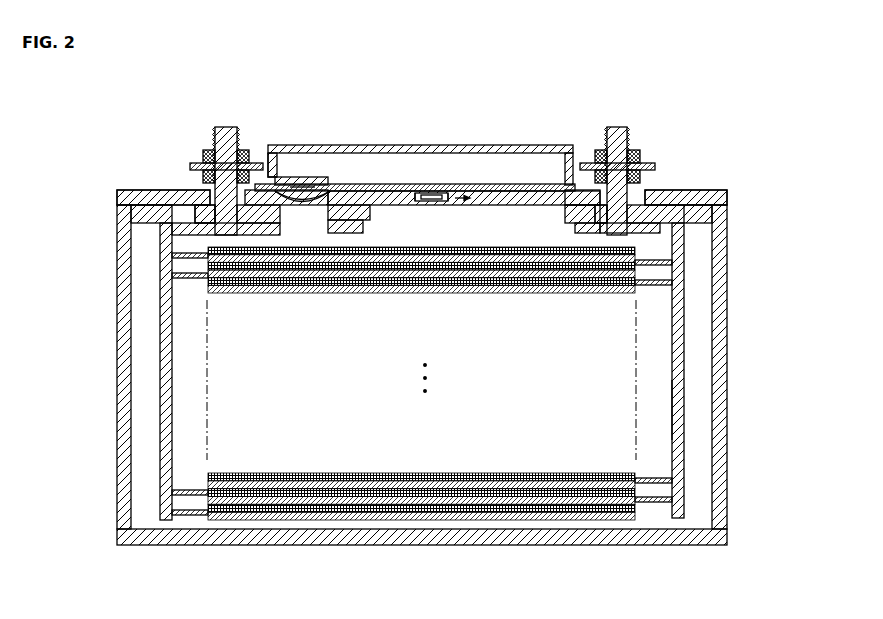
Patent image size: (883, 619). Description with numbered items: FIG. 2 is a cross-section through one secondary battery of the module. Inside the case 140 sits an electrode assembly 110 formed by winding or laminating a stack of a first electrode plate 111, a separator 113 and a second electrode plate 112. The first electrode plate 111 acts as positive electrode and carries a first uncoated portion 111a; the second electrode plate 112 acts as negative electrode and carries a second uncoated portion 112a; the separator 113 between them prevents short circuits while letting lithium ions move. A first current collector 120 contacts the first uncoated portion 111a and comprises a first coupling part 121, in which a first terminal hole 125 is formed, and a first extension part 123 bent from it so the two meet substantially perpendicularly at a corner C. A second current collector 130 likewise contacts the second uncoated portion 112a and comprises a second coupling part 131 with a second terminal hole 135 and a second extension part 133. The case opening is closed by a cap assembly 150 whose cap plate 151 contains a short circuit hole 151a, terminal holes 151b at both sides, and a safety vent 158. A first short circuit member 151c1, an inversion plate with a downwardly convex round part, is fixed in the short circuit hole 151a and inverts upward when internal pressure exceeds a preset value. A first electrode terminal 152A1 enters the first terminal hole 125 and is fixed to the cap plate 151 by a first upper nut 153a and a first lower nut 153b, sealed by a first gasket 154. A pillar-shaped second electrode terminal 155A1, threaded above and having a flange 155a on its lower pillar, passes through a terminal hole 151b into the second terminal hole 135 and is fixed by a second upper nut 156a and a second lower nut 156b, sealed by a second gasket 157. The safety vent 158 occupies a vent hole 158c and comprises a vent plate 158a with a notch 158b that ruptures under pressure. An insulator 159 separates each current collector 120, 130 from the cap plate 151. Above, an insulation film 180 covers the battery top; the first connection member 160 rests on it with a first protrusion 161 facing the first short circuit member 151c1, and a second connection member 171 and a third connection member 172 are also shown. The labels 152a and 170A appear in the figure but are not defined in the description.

The electrode assembly 110 is at (501, 531).
The first electrode plate 111 is at (565, 521).
The first uncoated portion 111a is at (655, 503).
The second electrode plate 112 is at (421, 531).
The second uncoated portion 112a is at (190, 516).
The separator 113 is at (437, 507).
The first current collector 120 is at (686, 328).
The first coupling part 121 is at (655, 200).
The first extension part 123 is at (684, 390).
The first terminal hole 125 is at (655, 265).
The second current collector 130 is at (158, 328).
The second coupling part 131 is at (175, 198).
The second extension part 133 is at (163, 405).
The second terminal hole 135 is at (200, 235).
The case 140 is at (728, 452).
The cap assembly 150 is at (303, 144).
The cap plate 151 is at (421, 289).
The short circuit hole 151a is at (290, 268).
The terminal holes 151b is at (232, 295).
The first short circuit member 151c1 is at (330, 282).
The first electrode terminal 152A1 is at (617, 127).
The second terminal flange 152a is at (660, 195).
The first upper nut 153a is at (634, 150).
The first lower nut 153b is at (642, 181).
The first gasket 154 is at (212, 210).
The second electrode terminal 155A1 is at (226, 127).
The flange 155a is at (200, 197).
The second upper nut 156a is at (208, 150).
The second lower nut 156b is at (205, 176).
The second gasket 157 is at (280, 175).
The safety vent 158 is at (492, 184).
The vent plate 158a is at (452, 206).
The notch 158b is at (437, 206).
The vent hole 158c is at (432, 201).
The insulator 159 is at (135, 215).
The first connection member 160 is at (302, 180).
The first protrusion 161 is at (307, 187).
The inversion plate 170A is at (316, 198).
The second connection member 171 is at (590, 163).
The third connection member 172 is at (250, 163).
The insulation film 180 is at (533, 198).
The corner C is at (705, 206).